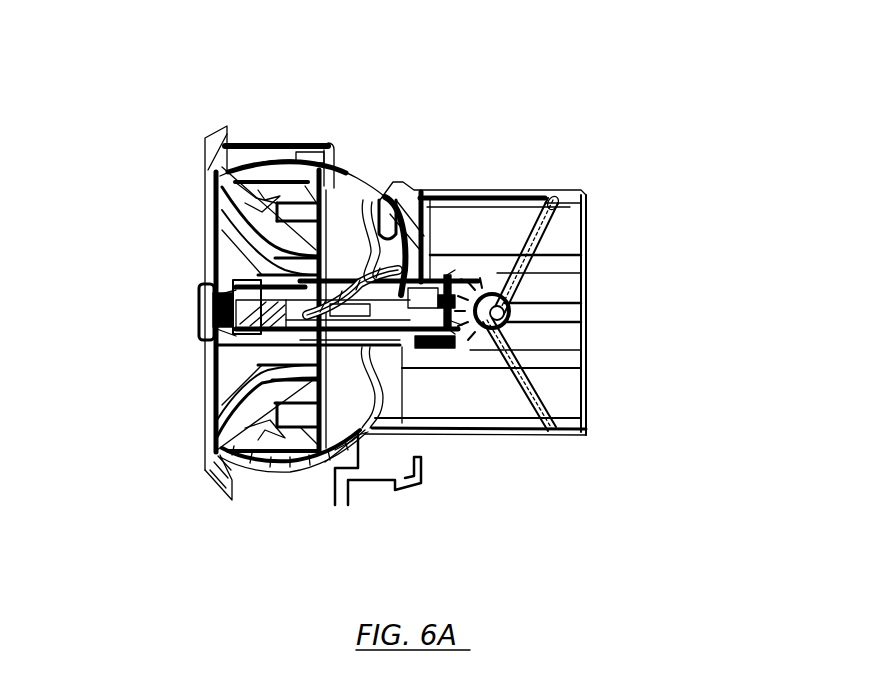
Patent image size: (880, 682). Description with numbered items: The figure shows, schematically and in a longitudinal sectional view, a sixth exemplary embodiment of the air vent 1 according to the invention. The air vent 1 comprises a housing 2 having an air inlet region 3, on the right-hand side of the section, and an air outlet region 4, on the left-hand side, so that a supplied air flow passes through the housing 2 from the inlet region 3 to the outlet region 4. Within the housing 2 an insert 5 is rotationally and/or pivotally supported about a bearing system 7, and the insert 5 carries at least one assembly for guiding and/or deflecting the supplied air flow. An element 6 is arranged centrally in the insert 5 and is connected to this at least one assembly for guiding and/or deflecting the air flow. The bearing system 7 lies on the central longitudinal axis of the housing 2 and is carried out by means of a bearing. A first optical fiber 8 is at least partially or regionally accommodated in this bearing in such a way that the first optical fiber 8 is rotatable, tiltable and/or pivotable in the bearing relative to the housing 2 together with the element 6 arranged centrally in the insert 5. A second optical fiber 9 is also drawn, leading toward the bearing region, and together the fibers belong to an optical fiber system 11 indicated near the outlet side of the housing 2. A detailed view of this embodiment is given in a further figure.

The air vent 1 is at (309, 44).
The housing 2 is at (274, 143).
The air inlet region 3 is at (632, 294).
The air outlet region 4 is at (168, 363).
The insert 5 is at (186, 308).
The element 6 is at (240, 283).
The bearing system 7 is at (253, 287).
The first optical fiber 8 is at (283, 305).
The second optical fiber 9 is at (397, 233).
The optical fiber system 11 is at (224, 172).